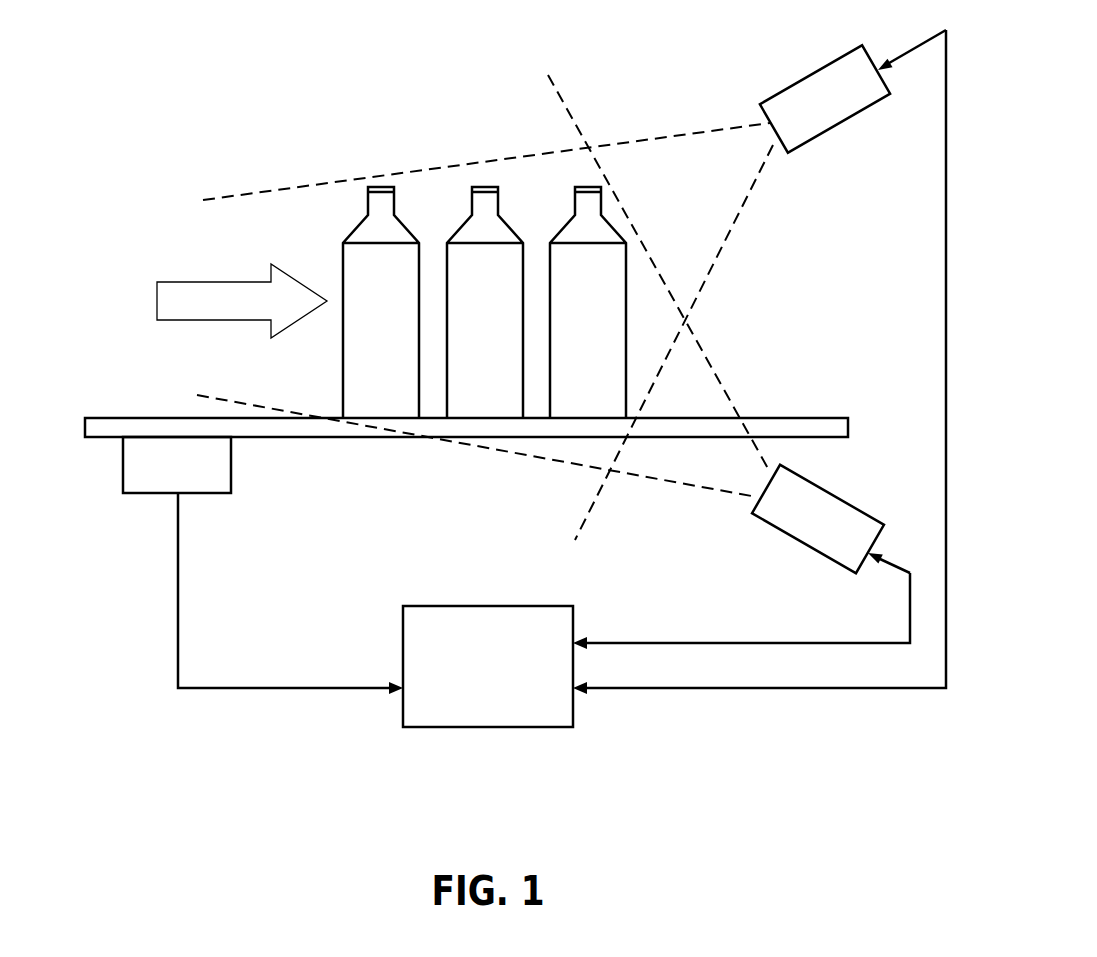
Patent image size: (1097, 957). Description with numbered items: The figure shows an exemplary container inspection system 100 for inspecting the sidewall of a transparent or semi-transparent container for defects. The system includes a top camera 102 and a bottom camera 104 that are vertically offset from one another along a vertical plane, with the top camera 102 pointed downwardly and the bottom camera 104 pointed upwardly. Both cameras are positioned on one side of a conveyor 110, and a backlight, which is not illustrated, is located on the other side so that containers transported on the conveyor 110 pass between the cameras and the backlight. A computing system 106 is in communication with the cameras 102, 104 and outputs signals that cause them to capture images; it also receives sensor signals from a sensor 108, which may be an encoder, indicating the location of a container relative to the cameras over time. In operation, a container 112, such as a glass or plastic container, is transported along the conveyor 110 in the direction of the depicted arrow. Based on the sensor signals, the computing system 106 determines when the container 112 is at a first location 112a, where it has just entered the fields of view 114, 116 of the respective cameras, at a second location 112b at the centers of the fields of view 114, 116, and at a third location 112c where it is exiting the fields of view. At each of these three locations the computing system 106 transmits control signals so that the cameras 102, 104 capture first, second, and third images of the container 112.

The container inspection system 100 is at (410, 50).
The top camera 102 is at (785, 90).
The bottom camera 104 is at (808, 480).
The computing system 106 is at (535, 720).
The sensor 108 is at (160, 493).
The conveyor 110 is at (142, 418).
The container 112 is at (466, 302).
The first location 112a is at (358, 408).
The second location 112b is at (462, 408).
The third location 112c is at (565, 408).
The field of view 114 is at (527, 155).
The field of view 116 is at (717, 492).